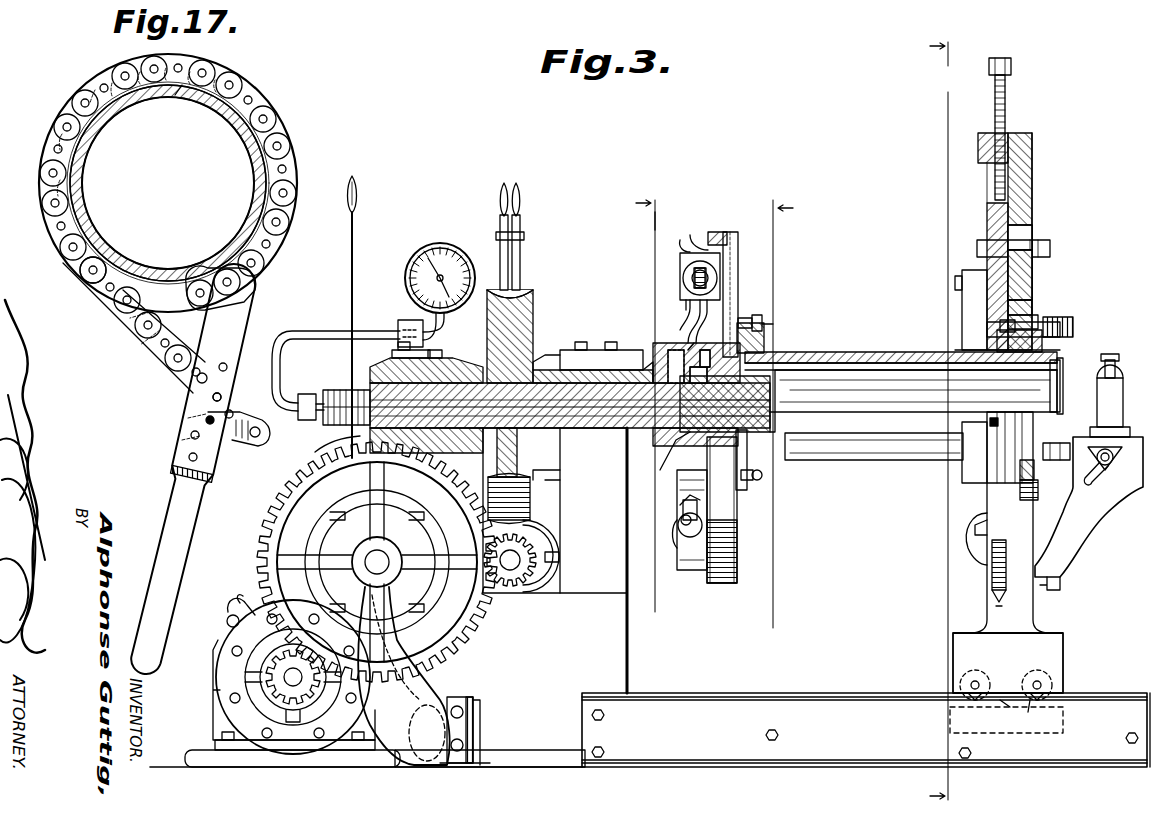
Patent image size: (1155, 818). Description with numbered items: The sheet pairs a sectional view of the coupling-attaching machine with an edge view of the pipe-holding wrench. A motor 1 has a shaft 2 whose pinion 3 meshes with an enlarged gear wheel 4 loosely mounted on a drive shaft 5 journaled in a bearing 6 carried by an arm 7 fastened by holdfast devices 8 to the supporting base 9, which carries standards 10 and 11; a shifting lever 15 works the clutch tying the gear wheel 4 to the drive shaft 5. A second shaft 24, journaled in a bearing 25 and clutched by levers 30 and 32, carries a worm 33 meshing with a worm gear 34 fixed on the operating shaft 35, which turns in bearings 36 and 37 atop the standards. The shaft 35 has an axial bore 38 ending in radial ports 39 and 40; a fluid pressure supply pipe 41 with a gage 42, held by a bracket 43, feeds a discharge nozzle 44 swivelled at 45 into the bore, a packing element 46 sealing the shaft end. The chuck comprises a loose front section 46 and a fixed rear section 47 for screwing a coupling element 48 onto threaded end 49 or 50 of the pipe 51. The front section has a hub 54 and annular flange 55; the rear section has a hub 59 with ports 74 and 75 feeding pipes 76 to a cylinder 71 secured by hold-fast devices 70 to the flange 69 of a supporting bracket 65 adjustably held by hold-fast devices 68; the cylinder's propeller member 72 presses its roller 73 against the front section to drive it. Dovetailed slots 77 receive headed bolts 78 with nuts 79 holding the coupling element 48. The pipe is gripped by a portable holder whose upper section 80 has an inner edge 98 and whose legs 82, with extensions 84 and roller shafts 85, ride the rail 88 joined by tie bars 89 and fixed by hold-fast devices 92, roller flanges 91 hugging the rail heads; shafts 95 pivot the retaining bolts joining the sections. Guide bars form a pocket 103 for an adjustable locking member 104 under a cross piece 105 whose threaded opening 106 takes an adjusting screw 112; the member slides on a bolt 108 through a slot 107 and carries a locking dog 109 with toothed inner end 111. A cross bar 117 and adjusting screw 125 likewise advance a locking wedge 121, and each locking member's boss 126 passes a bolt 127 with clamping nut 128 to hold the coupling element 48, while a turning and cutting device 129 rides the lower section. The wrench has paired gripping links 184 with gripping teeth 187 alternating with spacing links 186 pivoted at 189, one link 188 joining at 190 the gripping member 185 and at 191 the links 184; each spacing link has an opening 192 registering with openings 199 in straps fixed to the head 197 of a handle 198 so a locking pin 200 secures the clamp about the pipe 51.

In FIG. 3, the motor 1 is at (216, 663).
In FIG. 3, the motor shaft 2 is at (290, 685).
In FIG. 3, the pinion 3 is at (252, 672).
In FIG. 3, the gear wheel 4 is at (445, 650).
In FIG. 3, the drive shaft 5 is at (779, 410).
In FIG. 3, the bearing 6 is at (940, 420).
In FIG. 3, the arm 7 is at (646, 403).
In FIG. 3, the holdfast devices 8 is at (463, 712).
In FIG. 3, the supporting base 9 is at (367, 722).
In FIG. 3, the standard 10 is at (396, 500).
In FIG. 3, the standard 11 is at (555, 560).
In FIG. 3, the shifting lever 15 is at (350, 265).
In FIG. 3, the shaft 24 is at (512, 562).
In FIG. 3, the bearing 25 is at (562, 570).
In FIG. 3, the lever 30 is at (499, 228).
In FIG. 3, the lever 32 is at (524, 236).
In FIG. 3, the worm 33 is at (556, 555).
In FIG. 3, the worm gear 34 is at (530, 292).
In FIG. 3, the operating shaft 35 is at (590, 432).
In FIG. 3, the bearing 36 is at (455, 356).
In FIG. 3, the bearing 37 is at (596, 350).
In FIG. 3, the axial bore 38 is at (540, 368).
In FIG. 3, the port 39 is at (762, 392).
In FIG. 3, the port 40 is at (762, 410).
In FIG. 3, the fluid pressure supply pipe 41 is at (408, 320).
In FIG. 3, the gage 42 is at (441, 246).
In FIG. 3, the bracket 43 is at (395, 330).
In FIG. 3, the discharge nozzle 44 is at (333, 392).
In FIG. 3, the swivel connection 45 is at (303, 393).
In FIG. 3, the front chuck section 46 is at (335, 438).
In FIG. 3, the rear chuck section 47 is at (666, 215).
In FIG. 3, the coupling element 48 is at (762, 340).
In FIG. 3, the threaded end 49 is at (780, 352).
In FIG. 3, the threaded end 50 is at (1062, 366).
In FIG. 17, the pipe 51 is at (120, 108).
In FIG. 3, the hub 54 is at (688, 346).
In FIG. 3, the annular flange 55 is at (700, 246).
In FIG. 3, the hub 59 is at (668, 350).
In FIG. 3, the supporting bracket 65 is at (682, 515).
In FIG. 3, the hold-fast devices 68 is at (672, 525).
In FIG. 3, the flange 69 is at (688, 312).
In FIG. 3, the hold-fast devices 70 is at (682, 248).
In FIG. 3, the cylinder 71 is at (680, 260).
In FIG. 3, the propeller member 72 is at (686, 300).
In FIG. 3, the roller 73 is at (692, 276).
In FIG. 3, the port 74 is at (660, 350).
In FIG. 3, the port 75 is at (662, 462).
In FIG. 3, the fluid pressure conducting pipe 76 is at (698, 320).
In FIG. 3, the dovetailed slots 77 is at (738, 288).
In FIG. 3, the headed bolts 78 is at (757, 316).
In FIG. 3, the nuts 79 is at (783, 503).
In FIG. 3, the upper section 80 is at (1034, 211).
In FIG. 3, the legs 82 is at (1010, 558).
In FIG. 3, the depending extension 84 is at (1058, 658).
In FIG. 3, the shaft 85 is at (980, 683).
In FIG. 3, the rail 88 is at (866, 730).
In FIG. 3, the tie bars 89 is at (778, 736).
In FIG. 3, the flanges 91 is at (1008, 710).
In FIG. 3, the hold-fast devices 92 is at (604, 718).
In FIG. 3, the shaft 95 is at (987, 422).
In FIG. 3, the inner edge 98 is at (1030, 285).
In FIG. 3, the pocket 103 is at (1018, 176).
In FIG. 3, the adjustable locking member 104 is at (990, 214).
In FIG. 3, the cross piece 105 is at (970, 160).
In FIG. 3, the opening 106 is at (980, 150).
In FIG. 3, the slot 107 is at (1034, 234).
In FIG. 3, the bolt 108 is at (978, 246).
In FIG. 3, the locking dog 109 is at (965, 312).
In FIG. 3, the toothed inner end 111 is at (962, 343).
In FIG. 3, the adjusting screw 112 is at (1006, 98).
In FIG. 3, the cross bar 117 is at (975, 548).
In FIG. 3, the locking wedge 121 is at (1040, 320).
In FIG. 3, the adjusting screw 125 is at (993, 565).
In FIG. 3, the boss 126 is at (1035, 322).
In FIG. 3, the bolt 127 is at (1110, 390).
In FIG. 3, the clamping nut 128 is at (1073, 324).
In FIG. 3, the turning and cutting device 129 is at (1117, 492).
In FIG. 17, the gripping links 184 is at (283, 133).
In FIG. 17, the gripping member 185 is at (255, 290).
In FIG. 17, the spacing links 186 is at (289, 177).
In FIG. 17, the roller 187 is at (290, 150).
In FIG. 17, the link 188 is at (276, 114).
In FIG. 17, the pivotal connection 189 is at (236, 82).
In FIG. 17, the pivotal connection 190 is at (281, 221).
In FIG. 17, the pivotal connection 191 is at (242, 278).
In FIG. 17, the opening 192 is at (252, 100).
In FIG. 17, the head 197 is at (208, 480).
In FIG. 17, the handle 198 is at (178, 528).
In FIG. 17, the openings 199 is at (204, 448).
In FIG. 17, the locking pin 200 is at (213, 397).